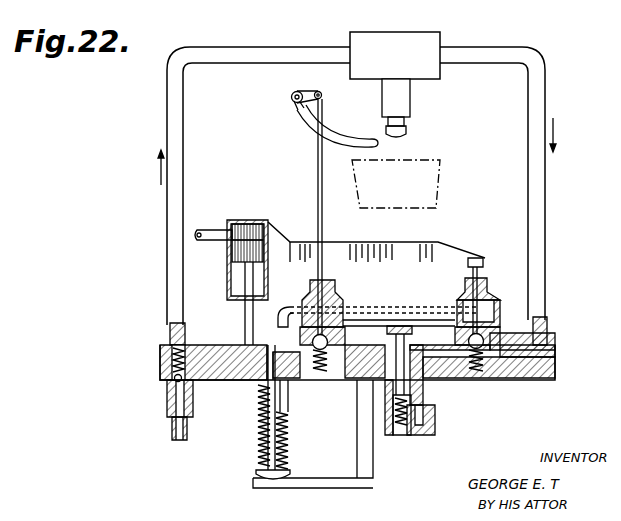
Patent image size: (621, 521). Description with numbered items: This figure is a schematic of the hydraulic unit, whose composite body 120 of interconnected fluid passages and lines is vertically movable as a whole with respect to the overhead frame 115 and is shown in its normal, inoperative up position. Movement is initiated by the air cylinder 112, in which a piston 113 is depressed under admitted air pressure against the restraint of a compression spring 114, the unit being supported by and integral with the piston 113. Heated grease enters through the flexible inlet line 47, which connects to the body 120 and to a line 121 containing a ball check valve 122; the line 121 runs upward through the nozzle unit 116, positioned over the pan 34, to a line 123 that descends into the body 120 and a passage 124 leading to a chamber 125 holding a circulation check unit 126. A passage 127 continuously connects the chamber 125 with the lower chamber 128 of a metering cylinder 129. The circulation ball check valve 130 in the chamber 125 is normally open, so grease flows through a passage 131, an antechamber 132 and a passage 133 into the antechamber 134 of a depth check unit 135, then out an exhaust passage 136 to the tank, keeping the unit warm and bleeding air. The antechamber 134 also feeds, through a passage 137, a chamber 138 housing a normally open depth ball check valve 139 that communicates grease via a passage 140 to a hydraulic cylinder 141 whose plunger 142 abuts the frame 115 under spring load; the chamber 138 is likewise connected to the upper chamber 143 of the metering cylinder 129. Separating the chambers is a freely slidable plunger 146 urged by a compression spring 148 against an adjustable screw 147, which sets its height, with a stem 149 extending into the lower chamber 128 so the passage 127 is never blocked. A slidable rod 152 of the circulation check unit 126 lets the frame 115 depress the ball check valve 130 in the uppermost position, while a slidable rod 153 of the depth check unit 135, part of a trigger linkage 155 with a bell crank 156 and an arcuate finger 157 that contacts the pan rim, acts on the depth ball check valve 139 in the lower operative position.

The line 121 is at (243, 48).
The line 123 is at (546, 165).
The nozzle unit 116 is at (440, 36).
The bell crank 156 is at (320, 72).
The trigger linkage 155 is at (290, 100).
The arcuate finger 157 is at (334, 142).
The slidable rod 153 is at (317, 163).
The pan 34 is at (440, 180).
The frame 115 is at (438, 240).
The antechamber 134 is at (328, 294).
The exhaust passage 136 is at (282, 310).
The passage 137 is at (378, 308).
The passage 133 is at (479, 256).
The slidable rod 152 is at (488, 272).
The antechamber 132 is at (500, 300).
The passage 131 is at (500, 322).
The circulation ball check valve 130 is at (492, 335).
The circulation check unit 126 is at (510, 336).
The composite body 120 is at (557, 358).
The passage 124 is at (525, 366).
The chamber 125 is at (483, 366).
The ball check valve 122 is at (170, 384).
The flexible inlet line 47 is at (172, 427).
The passage 140 is at (268, 350).
The chamber 138 is at (262, 390).
The depth check unit 135 is at (292, 392).
The hydraulic cylinder 141 is at (268, 412).
The plunger 142 is at (266, 432).
The compression spring 114 is at (258, 466).
The adjustable screw 147 is at (410, 331).
The passage 127 is at (421, 404).
The lower chamber 128 is at (410, 432).
The metering cylinder 129 is at (383, 452).
The depth ball check valve 139 is at (378, 376).
The upper chamber 143 is at (393, 384).
The plunger 146 is at (393, 396).
The compression spring 148 is at (400, 410).
The stem 149 is at (400, 424).
The air cylinder 112 is at (232, 244).
The piston 113 is at (236, 254).